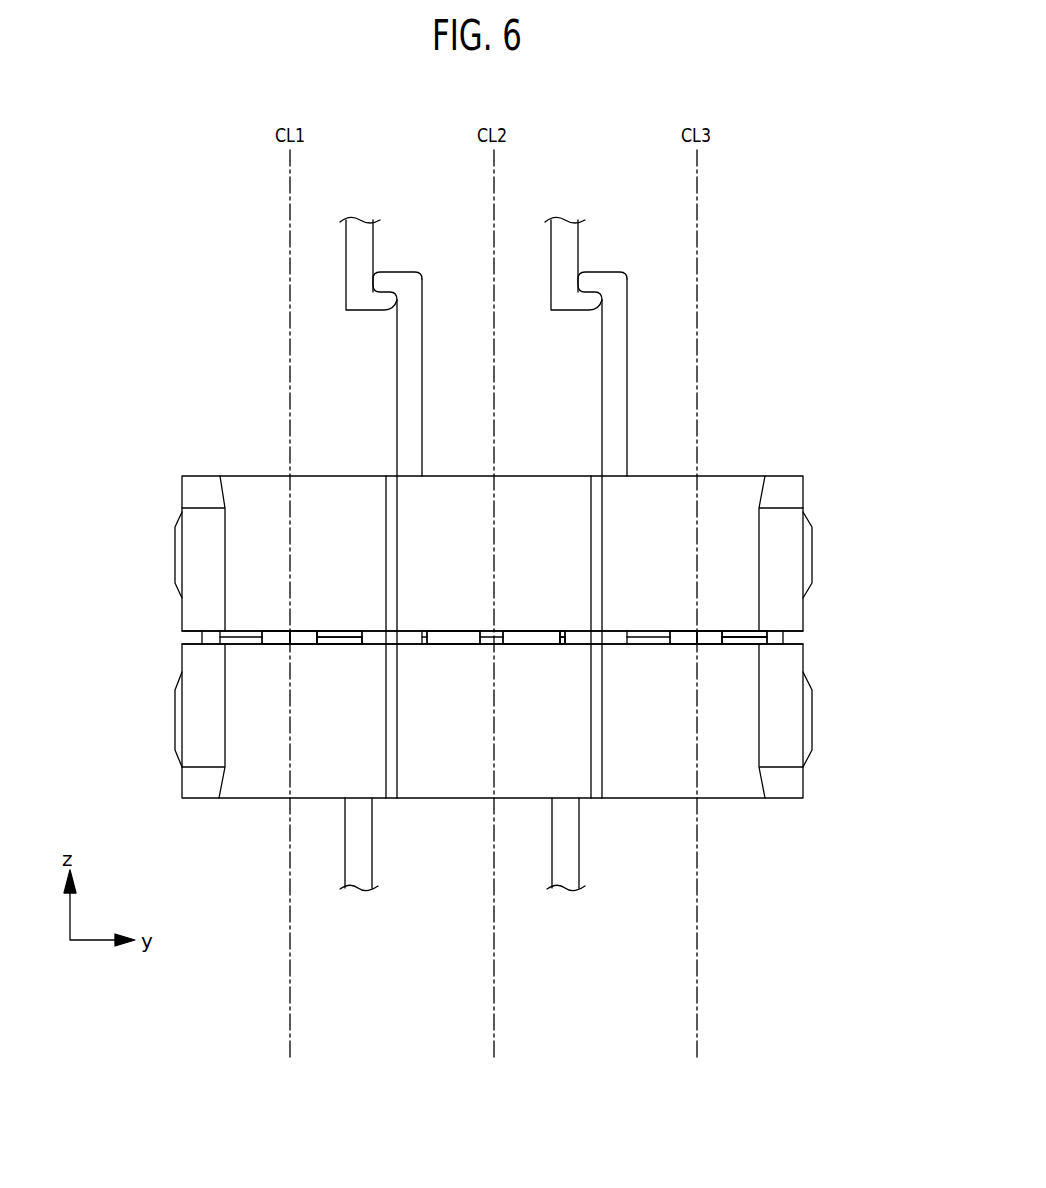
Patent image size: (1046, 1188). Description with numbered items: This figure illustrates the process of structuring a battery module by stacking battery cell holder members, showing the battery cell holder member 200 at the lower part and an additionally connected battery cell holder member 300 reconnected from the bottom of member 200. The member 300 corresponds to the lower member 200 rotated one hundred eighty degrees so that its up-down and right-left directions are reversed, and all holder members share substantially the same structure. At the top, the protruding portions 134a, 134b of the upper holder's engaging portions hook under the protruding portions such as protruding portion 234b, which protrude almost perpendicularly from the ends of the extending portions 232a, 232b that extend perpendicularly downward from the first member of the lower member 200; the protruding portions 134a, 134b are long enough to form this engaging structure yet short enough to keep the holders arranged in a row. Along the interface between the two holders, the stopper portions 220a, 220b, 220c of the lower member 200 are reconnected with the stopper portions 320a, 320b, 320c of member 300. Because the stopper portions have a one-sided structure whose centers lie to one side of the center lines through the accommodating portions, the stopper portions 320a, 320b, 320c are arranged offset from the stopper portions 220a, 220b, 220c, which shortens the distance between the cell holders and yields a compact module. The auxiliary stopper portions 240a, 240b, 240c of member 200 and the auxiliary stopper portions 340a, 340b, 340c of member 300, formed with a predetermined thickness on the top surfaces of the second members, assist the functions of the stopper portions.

The battery cell holder member 200 is at (130, 553).
The battery cell holder member 300 is at (130, 728).
The extending portion 232b is at (407, 442).
The extending portion 232a is at (613, 442).
The protruding portion 234b is at (402, 282).
The protruding portion 134a is at (370, 305).
The protruding portion 134b is at (576, 305).
The auxiliary stopper portion 240c is at (338, 631).
The auxiliary stopper portion 240b is at (565, 631).
The auxiliary stopper portion 240a is at (739, 640).
The auxiliary stopper portion 340c is at (742, 644).
The stopper portion 220c is at (270, 644).
The stopper portion 320a is at (303, 644).
The auxiliary stopper portion 340a is at (338, 644).
The stopper portion 220b is at (433, 644).
The stopper portion 320b is at (523, 644).
The auxiliary stopper portion 340b is at (566, 644).
The stopper portion 220a is at (680, 644).
The stopper portion 320c is at (708, 644).